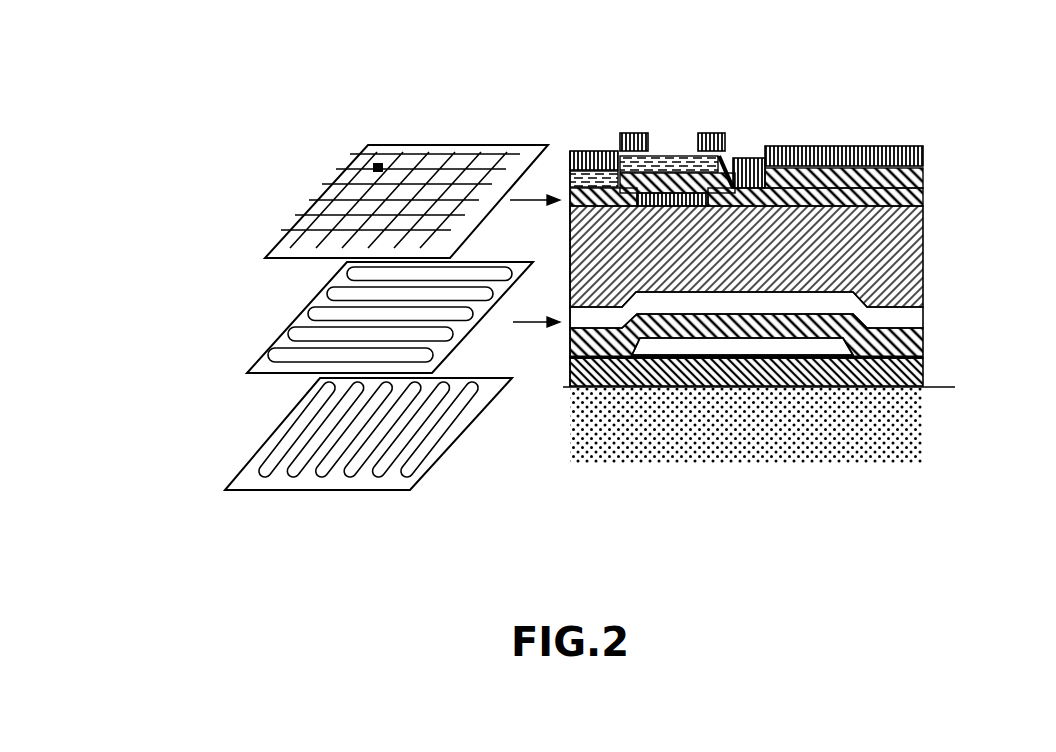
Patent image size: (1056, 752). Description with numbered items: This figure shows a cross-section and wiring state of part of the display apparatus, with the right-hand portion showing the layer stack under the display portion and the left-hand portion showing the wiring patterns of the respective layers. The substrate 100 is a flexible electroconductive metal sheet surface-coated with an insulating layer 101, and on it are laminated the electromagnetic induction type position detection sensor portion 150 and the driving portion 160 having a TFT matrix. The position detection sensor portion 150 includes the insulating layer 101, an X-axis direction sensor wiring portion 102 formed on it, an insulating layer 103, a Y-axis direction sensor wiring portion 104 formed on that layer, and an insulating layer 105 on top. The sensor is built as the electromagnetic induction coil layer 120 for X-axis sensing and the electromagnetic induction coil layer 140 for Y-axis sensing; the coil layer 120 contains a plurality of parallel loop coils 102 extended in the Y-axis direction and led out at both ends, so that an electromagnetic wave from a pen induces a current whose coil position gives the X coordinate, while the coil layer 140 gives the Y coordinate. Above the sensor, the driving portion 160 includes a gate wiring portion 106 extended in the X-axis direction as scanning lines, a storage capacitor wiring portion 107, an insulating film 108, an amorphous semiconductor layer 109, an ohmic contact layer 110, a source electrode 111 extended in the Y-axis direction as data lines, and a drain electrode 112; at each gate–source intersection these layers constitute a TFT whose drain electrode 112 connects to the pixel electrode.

The substrate 100 is at (805, 420).
The insulating layer 101 is at (923, 387).
The X-axis direction sensor wiring portion 102 is at (415, 470).
The insulating layer 103 is at (923, 340).
The Y-axis direction sensor wiring portion 104 is at (923, 313).
The insulating layer 105 is at (923, 246).
The gate wiring portion 106 is at (673, 157).
The storage capacitor wiring portion 107 is at (923, 200).
The insulating film 108 is at (923, 173).
The amorphous semiconductor layer 109 is at (733, 150).
The ohmic contact layer 110 is at (708, 133).
The source electrode 111 is at (603, 150).
The drain electrode 112 is at (853, 150).
The electromagnetic induction coil layer 120 is at (262, 445).
The electromagnetic induction coil layer 140 is at (260, 355).
The electromagnetic induction type position detection sensor portion 150 is at (934, 272).
The driving portion 160 is at (270, 255).